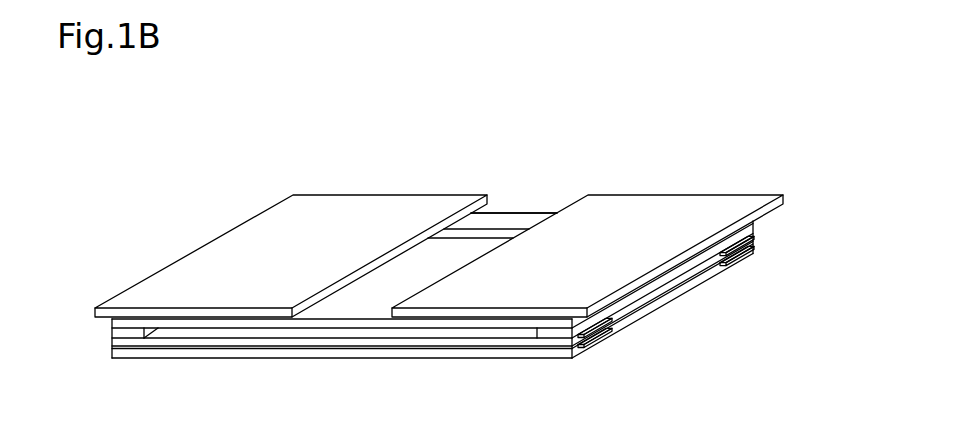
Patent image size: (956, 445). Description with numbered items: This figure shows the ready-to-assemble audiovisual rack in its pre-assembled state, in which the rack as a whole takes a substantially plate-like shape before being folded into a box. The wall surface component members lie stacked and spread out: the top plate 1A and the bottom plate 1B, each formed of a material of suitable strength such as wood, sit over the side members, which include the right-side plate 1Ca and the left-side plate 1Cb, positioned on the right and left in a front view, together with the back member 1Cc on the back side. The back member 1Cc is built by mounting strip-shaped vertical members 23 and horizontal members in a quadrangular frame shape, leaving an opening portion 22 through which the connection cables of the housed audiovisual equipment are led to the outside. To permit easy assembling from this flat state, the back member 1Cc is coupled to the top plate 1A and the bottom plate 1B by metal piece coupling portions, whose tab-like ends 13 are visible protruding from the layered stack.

The top plate 1A is at (668, 205).
The bottom plate 1B is at (358, 203).
The right-side plate 1Ca is at (237, 343).
The left-side plate 1Cb is at (132, 359).
The back member 1Cc is at (351, 314).
The terminal tab 13 is at (754, 246).
The opening portion 22 is at (498, 246).
The vertical member 23 is at (494, 228).